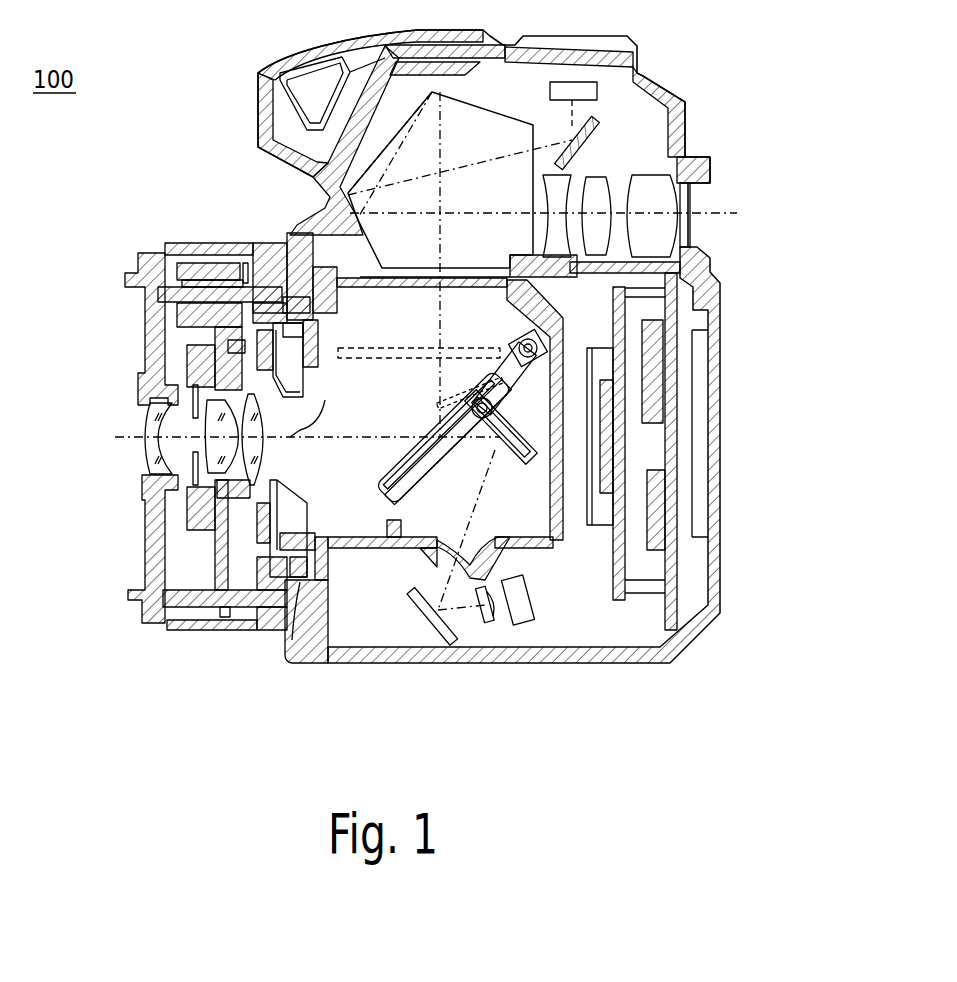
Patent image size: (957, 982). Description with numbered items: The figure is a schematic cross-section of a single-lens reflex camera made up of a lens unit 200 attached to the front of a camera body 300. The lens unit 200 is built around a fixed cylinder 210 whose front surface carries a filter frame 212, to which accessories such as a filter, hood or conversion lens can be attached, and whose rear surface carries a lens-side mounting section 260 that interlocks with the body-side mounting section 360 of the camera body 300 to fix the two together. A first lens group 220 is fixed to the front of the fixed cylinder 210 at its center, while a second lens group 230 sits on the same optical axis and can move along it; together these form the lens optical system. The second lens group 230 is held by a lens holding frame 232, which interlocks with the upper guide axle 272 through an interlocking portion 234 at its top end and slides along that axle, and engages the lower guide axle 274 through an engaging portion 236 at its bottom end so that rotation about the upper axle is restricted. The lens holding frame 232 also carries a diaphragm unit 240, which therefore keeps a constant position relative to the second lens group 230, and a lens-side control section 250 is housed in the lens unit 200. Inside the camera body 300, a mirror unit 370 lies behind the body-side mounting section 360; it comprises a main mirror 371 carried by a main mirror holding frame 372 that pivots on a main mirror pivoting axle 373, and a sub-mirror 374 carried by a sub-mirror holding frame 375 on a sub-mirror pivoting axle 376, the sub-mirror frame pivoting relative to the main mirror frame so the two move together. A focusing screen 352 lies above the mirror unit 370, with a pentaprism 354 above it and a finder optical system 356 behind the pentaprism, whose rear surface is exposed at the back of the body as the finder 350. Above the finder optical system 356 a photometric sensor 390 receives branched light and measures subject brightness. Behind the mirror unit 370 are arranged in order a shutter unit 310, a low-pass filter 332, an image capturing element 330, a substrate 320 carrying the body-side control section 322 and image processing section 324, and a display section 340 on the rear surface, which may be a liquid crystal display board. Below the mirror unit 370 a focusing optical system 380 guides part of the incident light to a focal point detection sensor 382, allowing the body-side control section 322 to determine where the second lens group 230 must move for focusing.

The lens unit 200 is at (288, 710).
The fixed cylinder 210 is at (138, 252).
The filter frame 212 is at (128, 598).
The first lens group 220 is at (150, 405).
The second lens group 230 is at (146, 430).
The lens holding frame 232 is at (160, 528).
The interlocking portion 234 is at (203, 262).
The engaging portion 236 is at (223, 607).
The diaphragm unit 240 is at (150, 482).
The lens-side control section 250 is at (280, 545).
The lens-side mounting section 260 is at (296, 607).
The guide axle 272 is at (190, 262).
The guide axle 274 is at (187, 607).
The camera body 300 is at (727, 710).
The shutter unit 310 is at (575, 372).
The substrate 320 is at (672, 563).
The body-side control section 322 is at (667, 513).
The image processing section 324 is at (663, 368).
The image capturing element 330 is at (620, 437).
The low-pass filter 332 is at (592, 475).
The display section 340 is at (702, 340).
The finder 350 is at (692, 228).
The focusing screen 352 is at (388, 287).
The pentaprism 354 is at (483, 113).
The finder optical system 356 is at (630, 166).
The body-side mounting section 360 is at (290, 250).
The mirror unit 370 is at (522, 552).
The main mirror 371 is at (400, 447).
The main mirror holding frame 372 is at (396, 453).
The main mirror pivoting axle 373 is at (515, 343).
The sub-mirror 374 is at (502, 450).
The sub-mirror holding frame 375 is at (500, 438).
The sub-mirror pivoting axle 376 is at (455, 395).
The focusing optical system 380 is at (482, 631).
The focal point detection sensor 382 is at (533, 600).
The photometric sensor 390 is at (597, 93).